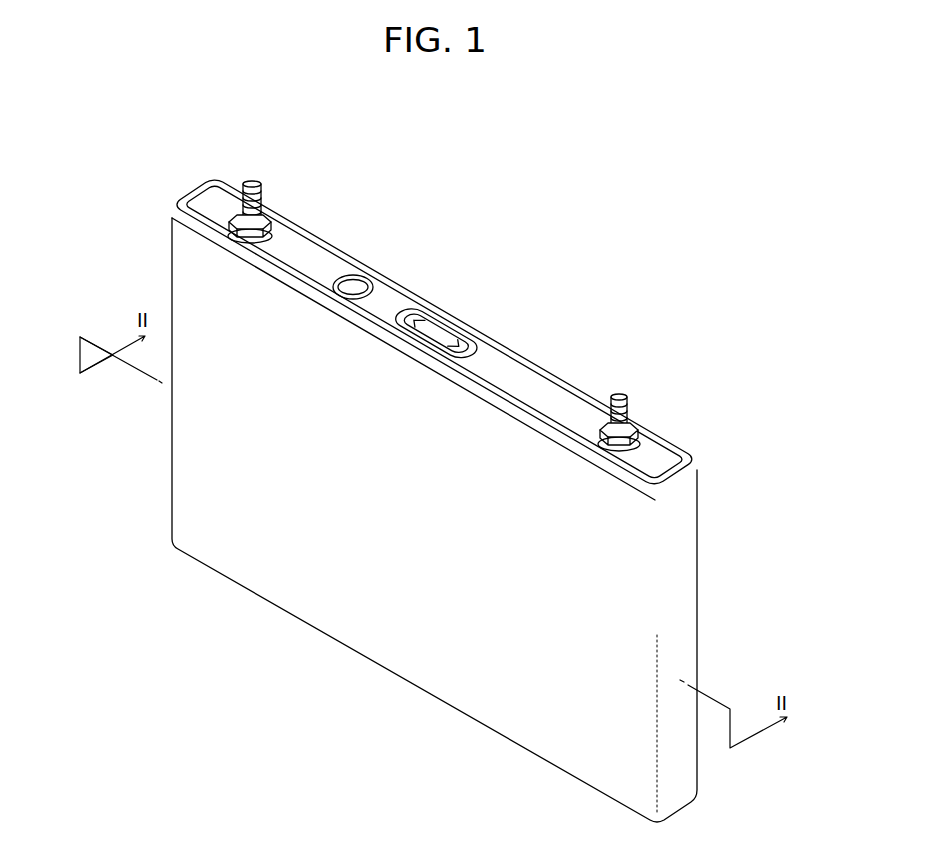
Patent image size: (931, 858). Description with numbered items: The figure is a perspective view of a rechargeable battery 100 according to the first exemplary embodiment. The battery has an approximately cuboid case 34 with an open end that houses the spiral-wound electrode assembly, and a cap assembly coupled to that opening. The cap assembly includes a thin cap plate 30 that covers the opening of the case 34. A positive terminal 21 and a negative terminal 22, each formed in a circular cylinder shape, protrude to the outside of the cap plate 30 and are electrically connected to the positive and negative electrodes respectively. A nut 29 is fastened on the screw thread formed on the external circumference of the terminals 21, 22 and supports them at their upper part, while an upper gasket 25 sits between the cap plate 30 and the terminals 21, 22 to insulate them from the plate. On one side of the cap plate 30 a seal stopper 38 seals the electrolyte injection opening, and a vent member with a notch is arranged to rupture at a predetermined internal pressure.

The rechargeable battery 100 is at (527, 327).
The positive terminal 21 is at (252, 181).
The negative terminal 22 is at (619, 394).
The upper gasket 25 is at (645, 447).
The nut 29 is at (633, 427).
The cap plate 30 is at (399, 289).
The case 34 is at (390, 644).
The seal stopper 38 is at (353, 276).